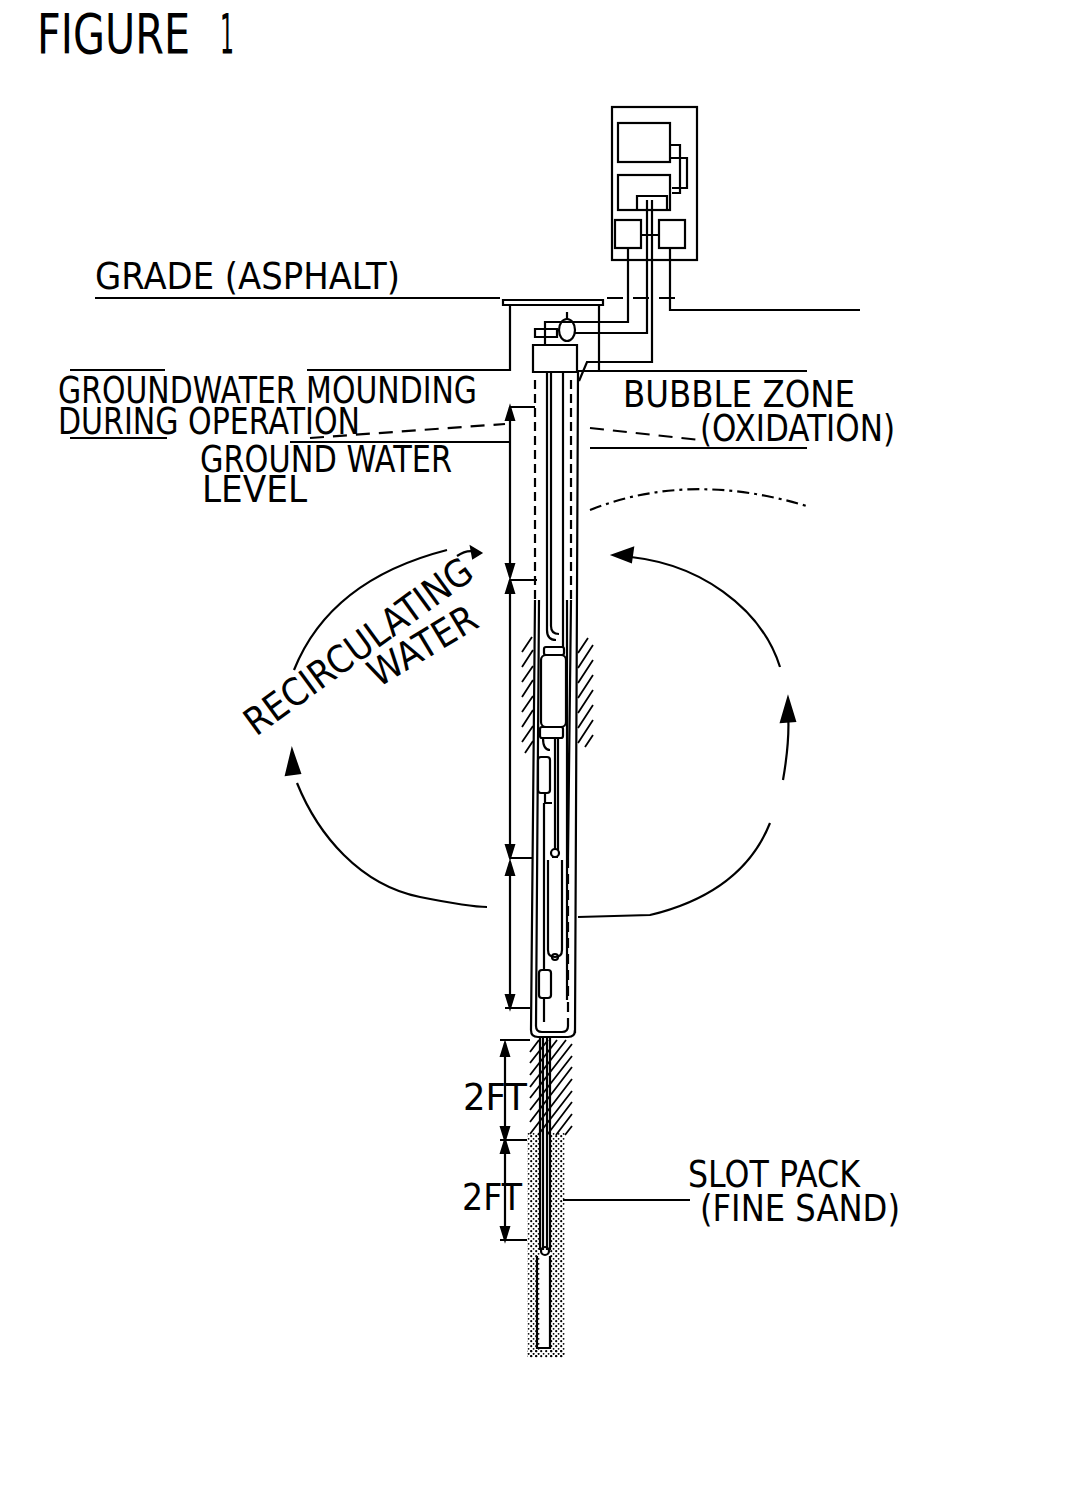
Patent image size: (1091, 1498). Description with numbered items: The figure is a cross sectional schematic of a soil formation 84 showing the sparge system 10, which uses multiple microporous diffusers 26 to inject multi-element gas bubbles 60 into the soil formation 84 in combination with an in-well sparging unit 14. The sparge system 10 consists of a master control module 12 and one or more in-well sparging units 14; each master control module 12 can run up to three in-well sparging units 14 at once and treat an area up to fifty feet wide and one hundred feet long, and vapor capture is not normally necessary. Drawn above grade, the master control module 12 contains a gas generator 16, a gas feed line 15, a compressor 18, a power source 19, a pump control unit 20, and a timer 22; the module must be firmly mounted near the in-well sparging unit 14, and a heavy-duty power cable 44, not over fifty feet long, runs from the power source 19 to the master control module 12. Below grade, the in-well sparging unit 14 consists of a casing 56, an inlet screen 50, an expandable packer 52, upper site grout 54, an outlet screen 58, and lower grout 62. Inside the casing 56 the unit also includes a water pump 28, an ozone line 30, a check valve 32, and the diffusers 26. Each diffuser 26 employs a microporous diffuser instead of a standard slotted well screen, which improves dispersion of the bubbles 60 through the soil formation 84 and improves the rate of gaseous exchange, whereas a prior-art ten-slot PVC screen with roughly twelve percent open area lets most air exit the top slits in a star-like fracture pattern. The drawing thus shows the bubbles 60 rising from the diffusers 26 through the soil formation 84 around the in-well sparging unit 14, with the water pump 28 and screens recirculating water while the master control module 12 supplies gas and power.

The sparge system 10 is at (712, 156).
The master control module 12 is at (697, 178).
The in-well sparging unit 14 is at (723, 512).
The gas feed line 15 is at (617, 335).
The gas generator 16 is at (633, 140).
The compressor 18 is at (632, 185).
The power source 19 is at (765, 280).
The pump control unit 20 is at (627, 235).
The timer 22 is at (673, 233).
The microporous diffuser 26 is at (557, 942).
The water pump 28 is at (550, 769).
The ozone line 30 is at (558, 808).
The check valve 32 is at (537, 985).
The heavy-duty power cable 44 is at (625, 287).
The inlet screen 50 is at (508, 530).
The expandable packer 52 is at (557, 697).
The upper site grout 54 is at (522, 722).
The casing 56 is at (508, 812).
The outlet screen 58 is at (482, 931).
The multi-element gas bubbles 60 is at (820, 713).
The lower grout 62 is at (565, 1077).
The soil formation 84 is at (273, 982).